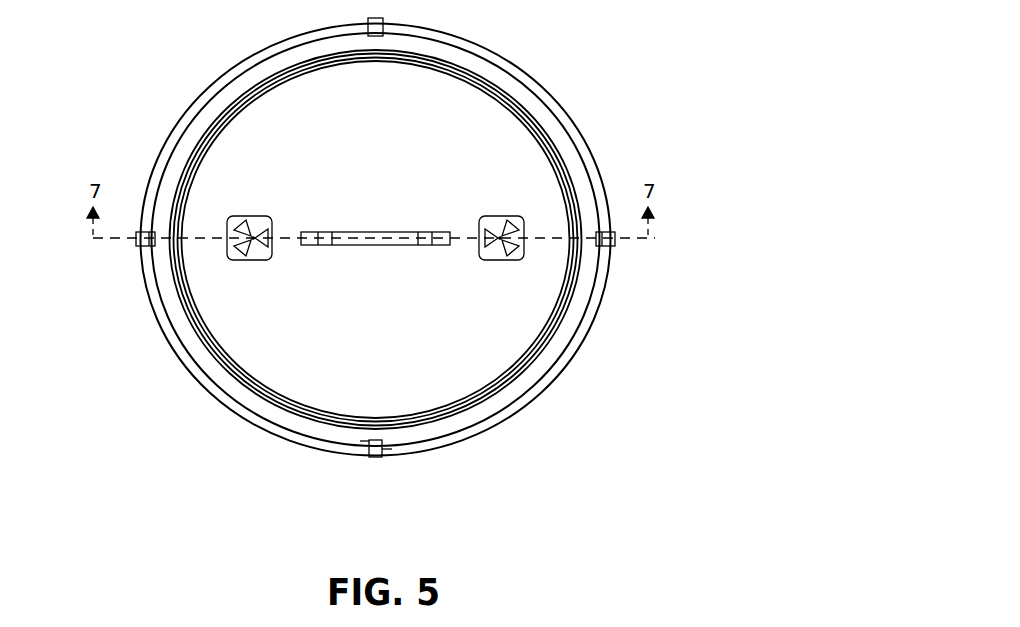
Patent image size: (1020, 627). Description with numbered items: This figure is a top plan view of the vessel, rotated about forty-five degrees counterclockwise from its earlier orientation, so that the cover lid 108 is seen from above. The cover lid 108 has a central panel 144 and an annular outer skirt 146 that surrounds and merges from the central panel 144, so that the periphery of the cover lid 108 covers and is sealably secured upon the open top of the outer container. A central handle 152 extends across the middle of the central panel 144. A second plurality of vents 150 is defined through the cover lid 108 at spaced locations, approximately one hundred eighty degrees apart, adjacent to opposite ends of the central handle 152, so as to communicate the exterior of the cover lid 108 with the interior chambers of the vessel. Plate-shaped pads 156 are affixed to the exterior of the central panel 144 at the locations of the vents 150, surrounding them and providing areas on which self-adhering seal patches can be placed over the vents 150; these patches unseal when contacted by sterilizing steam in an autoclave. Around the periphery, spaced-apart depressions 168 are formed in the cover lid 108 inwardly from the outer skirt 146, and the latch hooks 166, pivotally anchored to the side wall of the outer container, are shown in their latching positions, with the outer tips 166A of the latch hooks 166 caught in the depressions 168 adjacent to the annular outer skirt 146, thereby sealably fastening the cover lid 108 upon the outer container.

The cover lid 108 is at (608, 71).
The central panel 144 is at (393, 188).
The annular outer skirt 146 is at (580, 345).
The second plurality of vents 150 is at (255, 238).
The central handle 152 is at (362, 245).
The plate-shaped pads 156 is at (258, 260).
The latch hooks 166 is at (378, 457).
The outer tips 166A is at (382, 450).
The depressions 168 is at (368, 441).